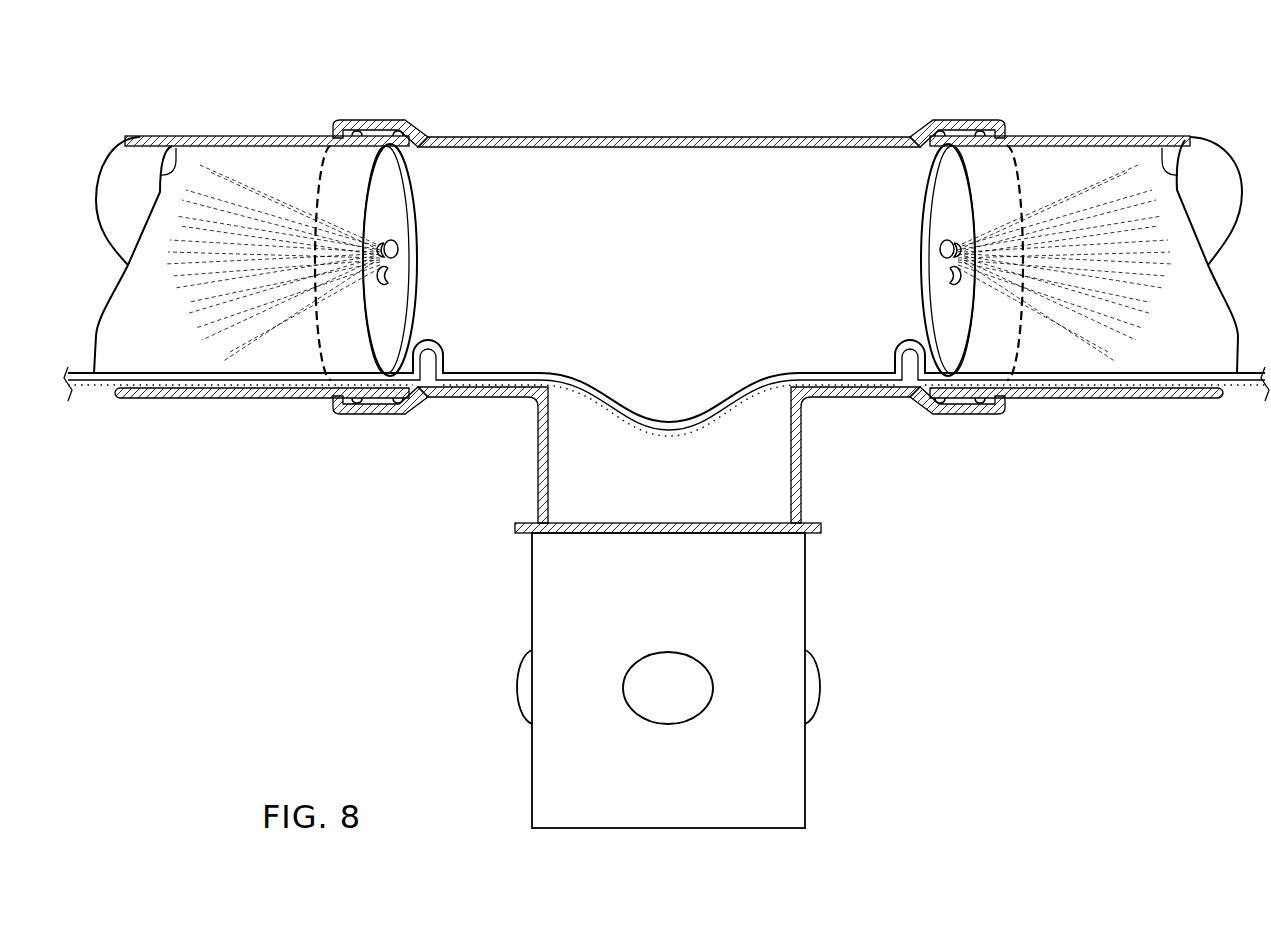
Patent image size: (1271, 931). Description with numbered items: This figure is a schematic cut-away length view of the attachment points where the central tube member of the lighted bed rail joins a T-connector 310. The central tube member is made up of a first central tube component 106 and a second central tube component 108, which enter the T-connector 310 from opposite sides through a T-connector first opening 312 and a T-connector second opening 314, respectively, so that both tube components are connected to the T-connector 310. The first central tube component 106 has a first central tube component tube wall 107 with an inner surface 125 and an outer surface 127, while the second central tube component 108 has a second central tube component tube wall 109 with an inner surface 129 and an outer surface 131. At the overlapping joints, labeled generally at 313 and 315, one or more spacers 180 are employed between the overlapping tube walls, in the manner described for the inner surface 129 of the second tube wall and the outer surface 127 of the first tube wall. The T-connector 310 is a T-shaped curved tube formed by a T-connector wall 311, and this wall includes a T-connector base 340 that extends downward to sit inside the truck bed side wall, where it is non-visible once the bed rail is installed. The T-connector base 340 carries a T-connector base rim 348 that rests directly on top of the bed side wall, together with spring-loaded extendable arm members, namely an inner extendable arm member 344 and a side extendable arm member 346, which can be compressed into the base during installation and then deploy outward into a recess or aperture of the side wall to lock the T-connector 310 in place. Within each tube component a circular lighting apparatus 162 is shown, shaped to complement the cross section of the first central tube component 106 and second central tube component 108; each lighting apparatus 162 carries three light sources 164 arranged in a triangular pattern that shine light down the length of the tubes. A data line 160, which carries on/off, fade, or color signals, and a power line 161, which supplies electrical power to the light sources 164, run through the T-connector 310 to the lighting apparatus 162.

The first central tube component 106 is at (200, 136).
The first central tube component tube wall 107 is at (273, 136).
The second central tube component 108 is at (1104, 136).
The second central tube component tube wall 109 is at (1177, 136).
The inner surface 125 is at (160, 175).
The outer surface 127 is at (303, 136).
The inner surface 129 is at (1178, 175).
The outer surface 131 is at (1040, 136).
The data line 160 is at (672, 440).
The power line 161 is at (672, 420).
The lighting apparatus 162 is at (416, 182).
The light source 164 is at (390, 241).
The spacer 180 is at (356, 132).
The T-connector 310 is at (614, 128).
The T-connector wall 311 is at (759, 136).
The T-connector first opening 312 is at (480, 246).
The first clamp joint 313 is at (436, 112).
The T-connector second opening 314 is at (860, 246).
The second clamp joint 315 is at (902, 112).
The T-connector base 340 is at (805, 578).
The inner extendable arm member 344 is at (518, 684).
The side extendable arm member 346 is at (670, 652).
The T-connector base rim 348 is at (624, 534).